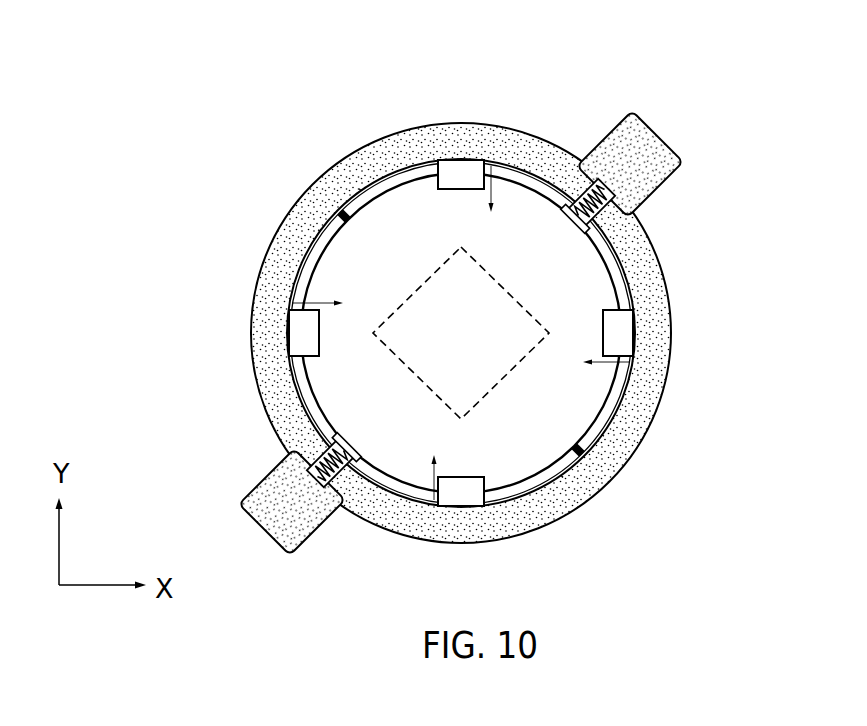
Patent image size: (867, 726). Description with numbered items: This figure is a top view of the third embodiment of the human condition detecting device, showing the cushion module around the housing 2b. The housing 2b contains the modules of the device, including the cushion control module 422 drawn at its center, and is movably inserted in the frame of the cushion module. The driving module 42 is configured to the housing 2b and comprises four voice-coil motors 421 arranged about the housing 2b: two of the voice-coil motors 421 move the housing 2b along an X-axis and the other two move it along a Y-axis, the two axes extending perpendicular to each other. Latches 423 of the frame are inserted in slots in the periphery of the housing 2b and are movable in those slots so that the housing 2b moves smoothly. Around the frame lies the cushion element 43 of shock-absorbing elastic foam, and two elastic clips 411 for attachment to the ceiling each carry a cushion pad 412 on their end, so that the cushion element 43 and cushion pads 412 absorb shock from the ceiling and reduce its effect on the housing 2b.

The positioning assembly 42 is at (441, 61).
The voice-coil motor 421 is at (459, 172).
The cushion control module 422 is at (445, 262).
The latch 423 is at (333, 206).
The elastic clip 411 is at (618, 205).
The cushion pad 412 is at (658, 142).
The cushion element 43 is at (665, 335).
The housing 2b is at (590, 400).